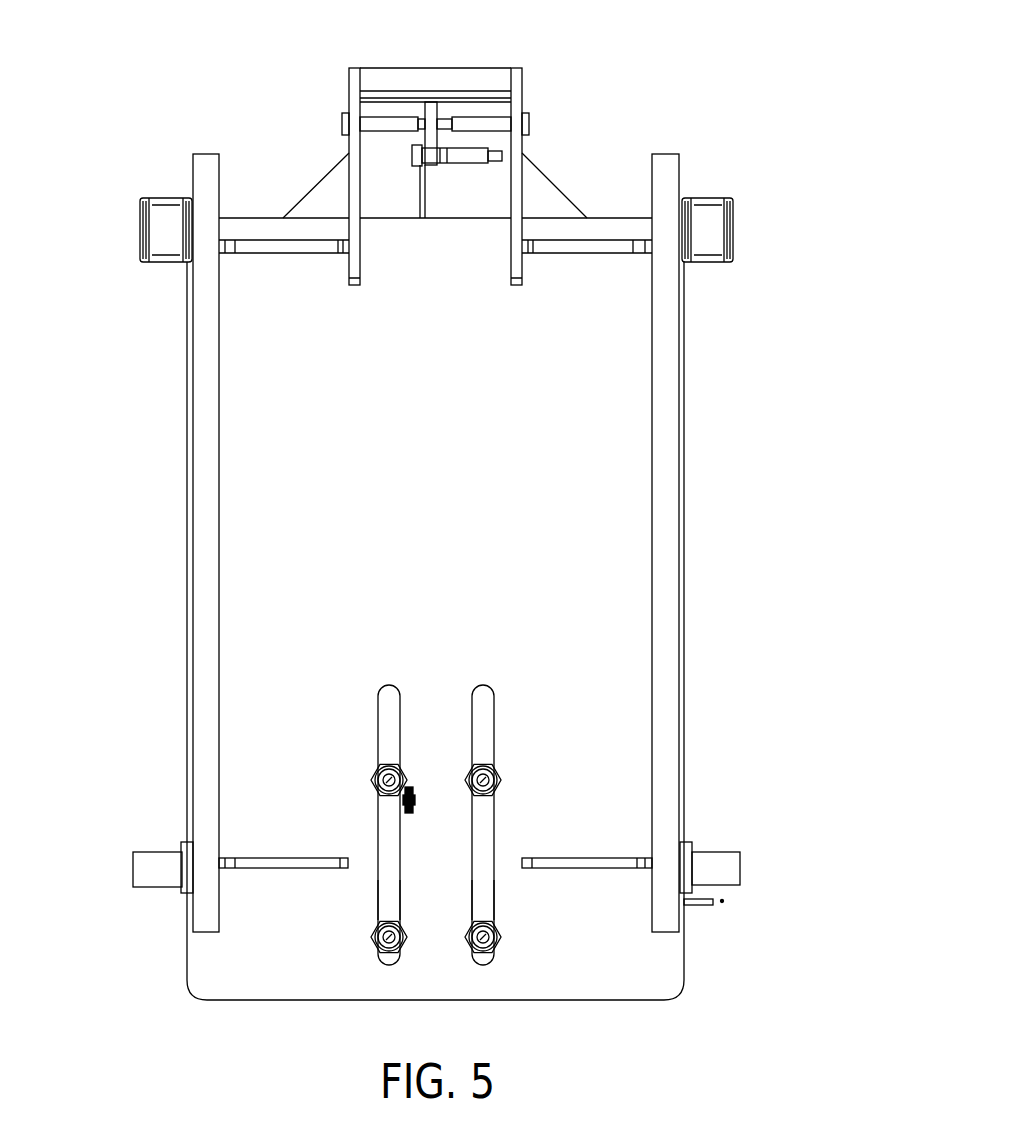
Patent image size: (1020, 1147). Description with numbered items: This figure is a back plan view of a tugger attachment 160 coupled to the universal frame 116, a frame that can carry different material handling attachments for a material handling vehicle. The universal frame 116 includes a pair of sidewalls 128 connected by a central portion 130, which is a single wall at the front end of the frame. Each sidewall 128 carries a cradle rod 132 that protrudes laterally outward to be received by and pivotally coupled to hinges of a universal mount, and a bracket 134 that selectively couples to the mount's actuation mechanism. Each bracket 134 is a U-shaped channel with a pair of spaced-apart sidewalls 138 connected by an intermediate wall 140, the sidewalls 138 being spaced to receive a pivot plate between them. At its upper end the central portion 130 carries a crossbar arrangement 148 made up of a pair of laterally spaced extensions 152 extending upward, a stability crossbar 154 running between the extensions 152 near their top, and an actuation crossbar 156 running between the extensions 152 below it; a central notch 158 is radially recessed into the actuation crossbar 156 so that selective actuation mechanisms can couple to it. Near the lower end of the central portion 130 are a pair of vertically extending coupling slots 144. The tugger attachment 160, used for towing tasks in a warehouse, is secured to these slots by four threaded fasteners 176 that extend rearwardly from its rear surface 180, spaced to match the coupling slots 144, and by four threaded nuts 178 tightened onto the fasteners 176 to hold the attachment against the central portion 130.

The universal frame 116 is at (124, 120).
The sidewalls 128 is at (203, 570).
The central portion 130 is at (578, 655).
The cradle rod 132 is at (148, 872).
The bracket 134 is at (436, 227).
The spaced-apart sidewalls 138 is at (186, 198).
The intermediate wall 140 is at (165, 255).
The coupling slots 144 is at (483, 684).
The crossbar arrangement 148 is at (462, 145).
The extensions 152 is at (349, 143).
The stability crossbar 154 is at (495, 78).
The actuation crossbar 156 is at (400, 133).
The central notch 158 is at (448, 118).
The tugger attachment 160 is at (389, 866).
The threaded fasteners 176 is at (373, 777).
The threaded nuts 178 is at (378, 785).
The rear surface 180 is at (382, 893).